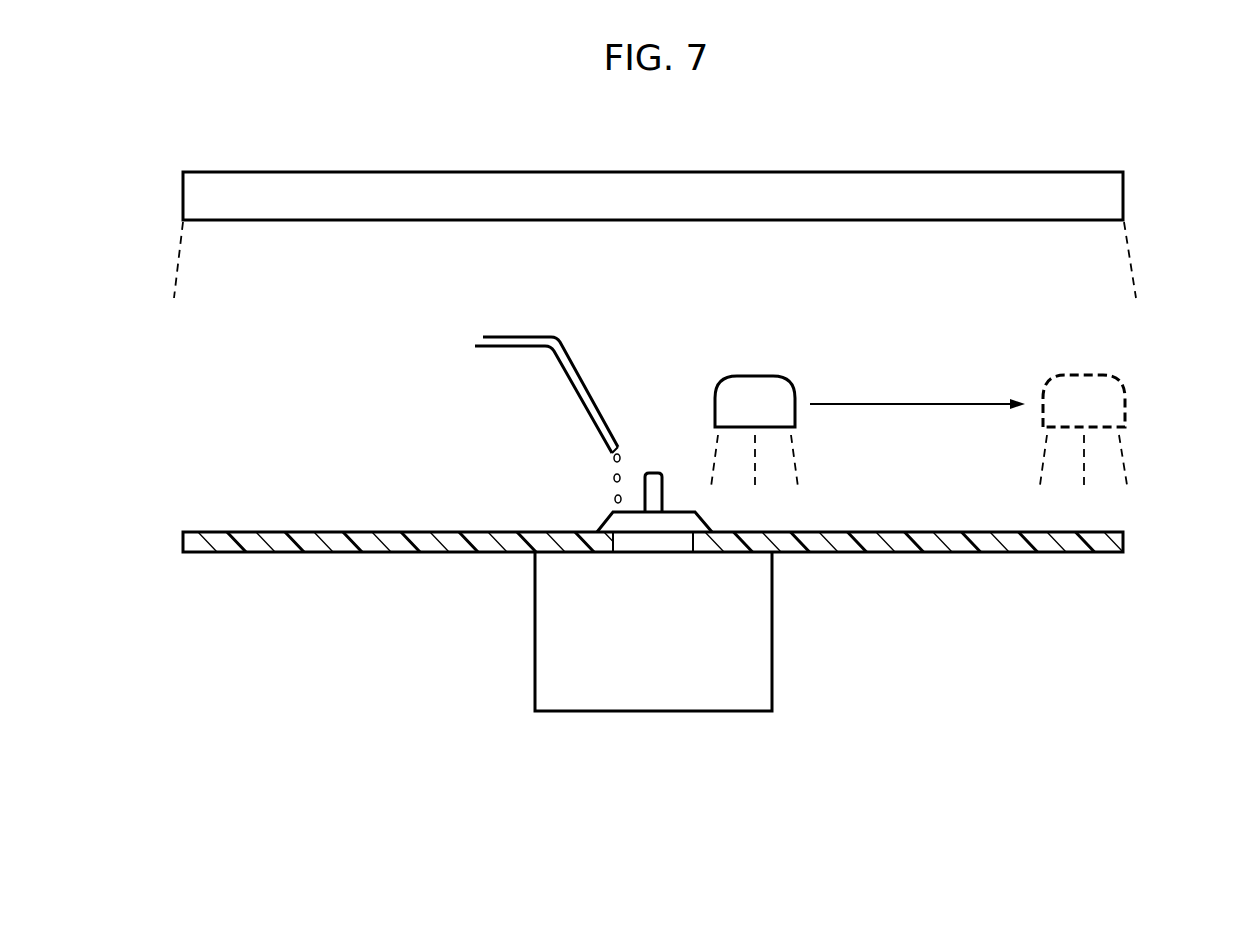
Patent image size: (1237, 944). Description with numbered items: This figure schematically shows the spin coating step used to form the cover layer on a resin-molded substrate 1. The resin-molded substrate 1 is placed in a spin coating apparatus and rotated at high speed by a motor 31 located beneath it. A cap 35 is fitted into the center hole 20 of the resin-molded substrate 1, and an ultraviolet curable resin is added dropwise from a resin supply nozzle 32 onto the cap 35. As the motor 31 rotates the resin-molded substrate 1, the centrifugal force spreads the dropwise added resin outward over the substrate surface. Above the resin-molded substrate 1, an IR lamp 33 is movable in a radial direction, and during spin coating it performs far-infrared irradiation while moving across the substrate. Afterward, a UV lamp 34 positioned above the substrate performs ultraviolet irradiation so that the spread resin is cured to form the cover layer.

The resin-molded substrate 1 is at (262, 553).
The center hole 20 is at (616, 546).
The motor 31 is at (772, 630).
The resin supply nozzle 32 is at (540, 335).
The IR lamp 33 is at (760, 376).
The UV lamp 34 is at (927, 180).
The cap 35 is at (651, 471).